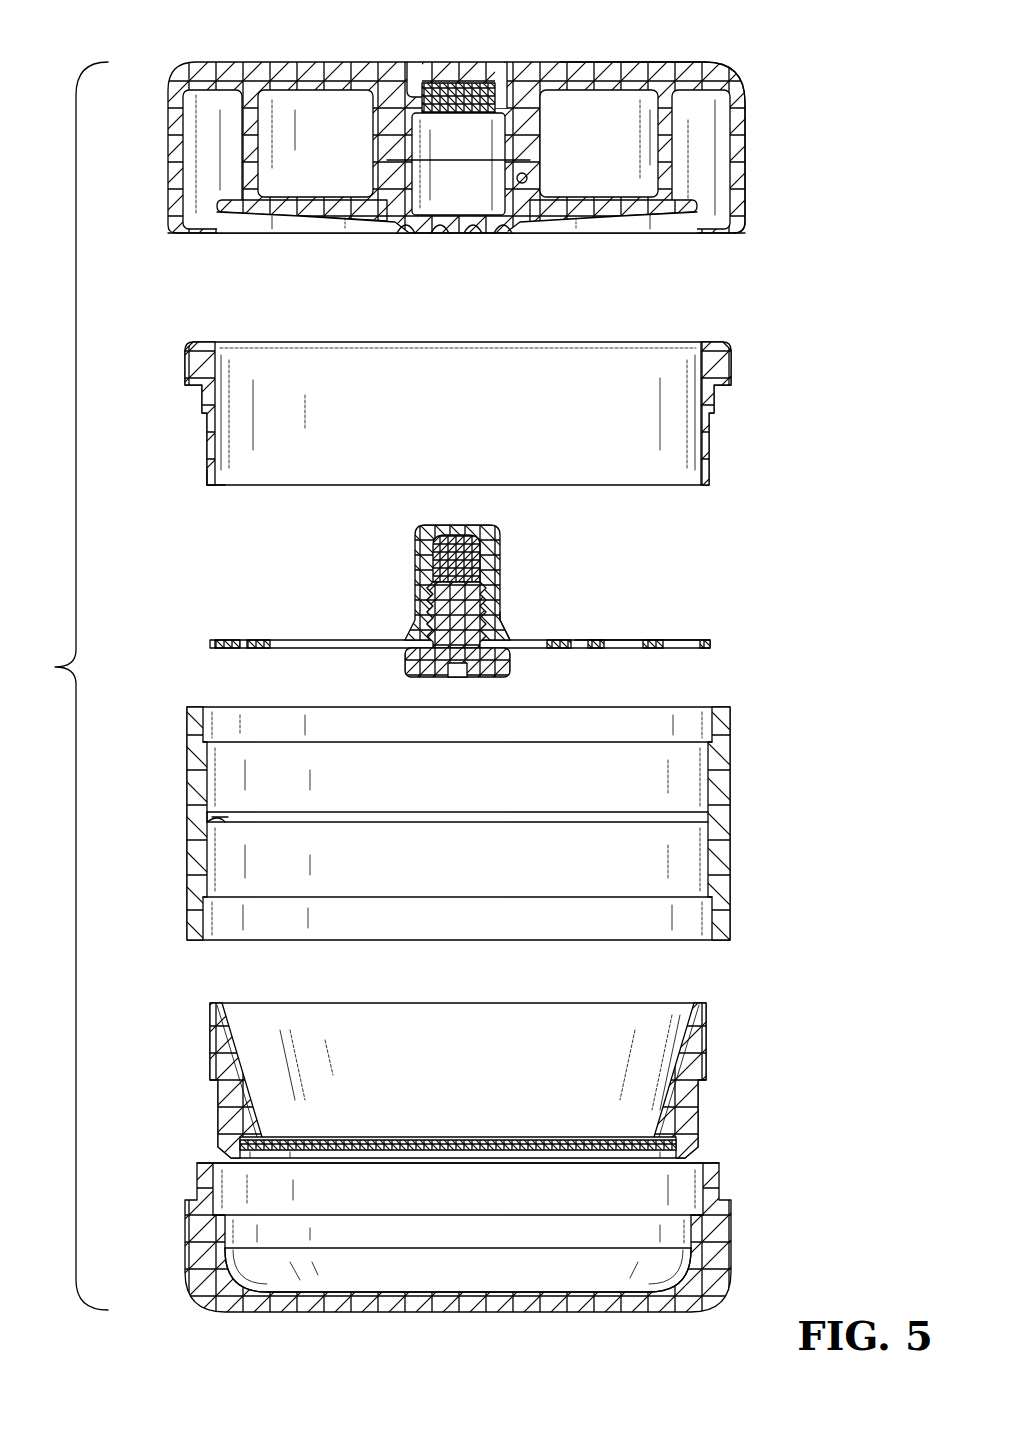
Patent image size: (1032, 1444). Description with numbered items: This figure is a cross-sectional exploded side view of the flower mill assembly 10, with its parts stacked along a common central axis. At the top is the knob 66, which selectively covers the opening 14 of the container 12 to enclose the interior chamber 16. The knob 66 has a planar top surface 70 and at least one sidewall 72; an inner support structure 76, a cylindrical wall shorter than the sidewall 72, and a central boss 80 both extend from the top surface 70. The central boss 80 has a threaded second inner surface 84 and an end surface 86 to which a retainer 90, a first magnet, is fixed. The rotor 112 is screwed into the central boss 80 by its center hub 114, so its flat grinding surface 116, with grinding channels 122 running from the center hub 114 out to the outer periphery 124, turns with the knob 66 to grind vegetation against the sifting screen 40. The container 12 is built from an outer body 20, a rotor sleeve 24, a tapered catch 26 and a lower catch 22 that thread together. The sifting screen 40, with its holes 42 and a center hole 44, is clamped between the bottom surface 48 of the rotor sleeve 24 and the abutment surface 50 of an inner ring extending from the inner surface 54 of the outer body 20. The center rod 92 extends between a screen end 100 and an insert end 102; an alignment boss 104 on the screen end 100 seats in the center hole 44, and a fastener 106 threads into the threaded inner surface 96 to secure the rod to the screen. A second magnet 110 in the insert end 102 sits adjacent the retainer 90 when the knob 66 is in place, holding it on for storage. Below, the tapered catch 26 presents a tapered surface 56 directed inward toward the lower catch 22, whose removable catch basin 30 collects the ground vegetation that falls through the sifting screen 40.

The flower mill assembly 10 is at (61, 686).
The container 12 is at (418, 823).
The opening 14 is at (421, 394).
The interior chamber 16 is at (417, 1080).
The outer body 20 is at (190, 862).
The lower catch 22 is at (418, 1237).
The rotor sleeve 24 is at (185, 370).
The tapered catch 26 is at (210, 1050).
The catch basin 30 is at (458, 1270).
The sifting screen 40 is at (421, 619).
The holes 42 is at (625, 640).
The center hole 44 is at (490, 608).
The bottom surface 48 is at (210, 490).
The abutment surface 50 is at (212, 812).
The inner surface 54 is at (222, 822).
The tapered surface 56 is at (684, 1065).
The knob 66 is at (458, 154).
The top surface 70 is at (650, 60).
The sidewall 72 is at (750, 150).
The inner support structure 76 is at (655, 165).
The central boss 80 is at (315, 143).
The second inner surface 84 is at (530, 176).
The end surface 86 is at (410, 75).
The retainer 90 is at (505, 95).
The center rod 92 is at (423, 542).
The threaded inner surface 96 is at (472, 652).
The screen end 100 is at (425, 692).
The insert end 102 is at (455, 532).
The alignment boss 104 is at (438, 664).
The fastener 106 is at (637, 664).
The second magnet 110 is at (420, 602).
The rotor 112 is at (391, 156).
The center hub 114 is at (418, 222).
The grinding surface 116 is at (612, 238).
The grinding channel 122 is at (630, 222).
The outer periphery 124 is at (230, 205).